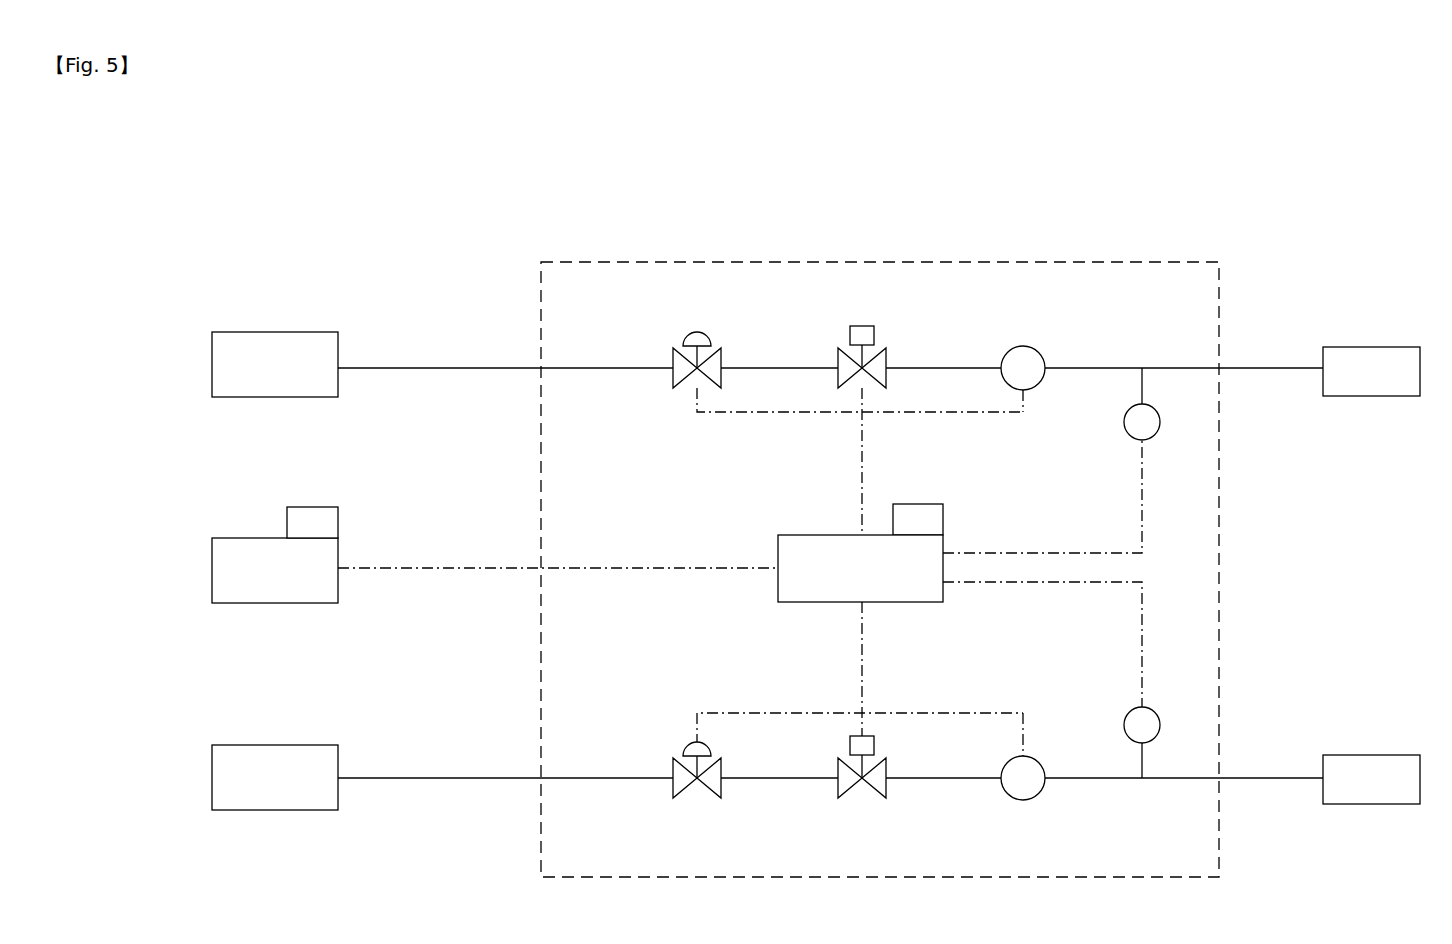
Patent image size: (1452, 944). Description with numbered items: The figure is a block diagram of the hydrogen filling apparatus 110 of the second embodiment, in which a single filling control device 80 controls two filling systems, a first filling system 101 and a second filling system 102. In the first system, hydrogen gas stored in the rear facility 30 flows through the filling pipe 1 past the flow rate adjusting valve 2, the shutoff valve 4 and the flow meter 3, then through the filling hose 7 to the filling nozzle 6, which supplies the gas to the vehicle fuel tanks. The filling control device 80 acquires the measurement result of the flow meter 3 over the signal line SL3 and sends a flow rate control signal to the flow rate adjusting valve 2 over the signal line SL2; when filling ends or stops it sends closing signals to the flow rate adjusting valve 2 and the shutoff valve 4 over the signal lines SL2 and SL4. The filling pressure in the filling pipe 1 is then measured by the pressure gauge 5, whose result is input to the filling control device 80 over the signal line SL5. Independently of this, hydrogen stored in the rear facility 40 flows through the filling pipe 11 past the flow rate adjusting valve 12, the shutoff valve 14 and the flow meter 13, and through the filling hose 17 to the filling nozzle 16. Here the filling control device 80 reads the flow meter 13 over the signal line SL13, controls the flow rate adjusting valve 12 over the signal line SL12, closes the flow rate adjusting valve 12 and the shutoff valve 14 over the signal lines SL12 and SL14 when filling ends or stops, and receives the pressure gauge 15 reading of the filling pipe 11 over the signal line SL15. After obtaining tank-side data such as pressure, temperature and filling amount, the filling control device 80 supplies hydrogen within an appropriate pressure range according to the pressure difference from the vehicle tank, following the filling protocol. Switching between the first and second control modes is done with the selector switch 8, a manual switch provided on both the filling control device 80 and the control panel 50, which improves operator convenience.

The hydrogen filling apparatus 110 is at (620, 222).
The first filling system 101 is at (1118, 338).
The second filling system 102 is at (1122, 798).
The rear facility 30 is at (300, 332).
The rear facility 40 is at (300, 745).
The control panel 50 is at (262, 538).
The selector switch 8 is at (318, 507).
The filling control device 80 is at (816, 535).
The filling pipe 1 is at (600, 368).
The flow rate adjusting valve 2 is at (713, 350).
The shutoff valve 4 is at (882, 355).
The flow meter 3 is at (1038, 350).
The pressure gauge 5 is at (1154, 438).
The filling hose 7 is at (1254, 368).
The filling nozzle 6 is at (1377, 347).
The filling pipe 11 is at (592, 778).
The flow rate adjusting valve 12 is at (694, 786).
The shutoff valve 14 is at (862, 786).
The flow meter 13 is at (1036, 796).
The pressure gauge 15 is at (1154, 710).
The filling hose 17 is at (1254, 778).
The filling nozzle 16 is at (1375, 755).
The signal line SL2 is at (690, 410).
The signal line SL3 is at (1028, 410).
The signal line SL4 is at (872, 404).
The signal line SL5 is at (1056, 553).
The signal line SL12 is at (694, 712).
The signal line SL13 is at (1025, 728).
The signal line SL14 is at (872, 732).
The signal line SL15 is at (1058, 582).